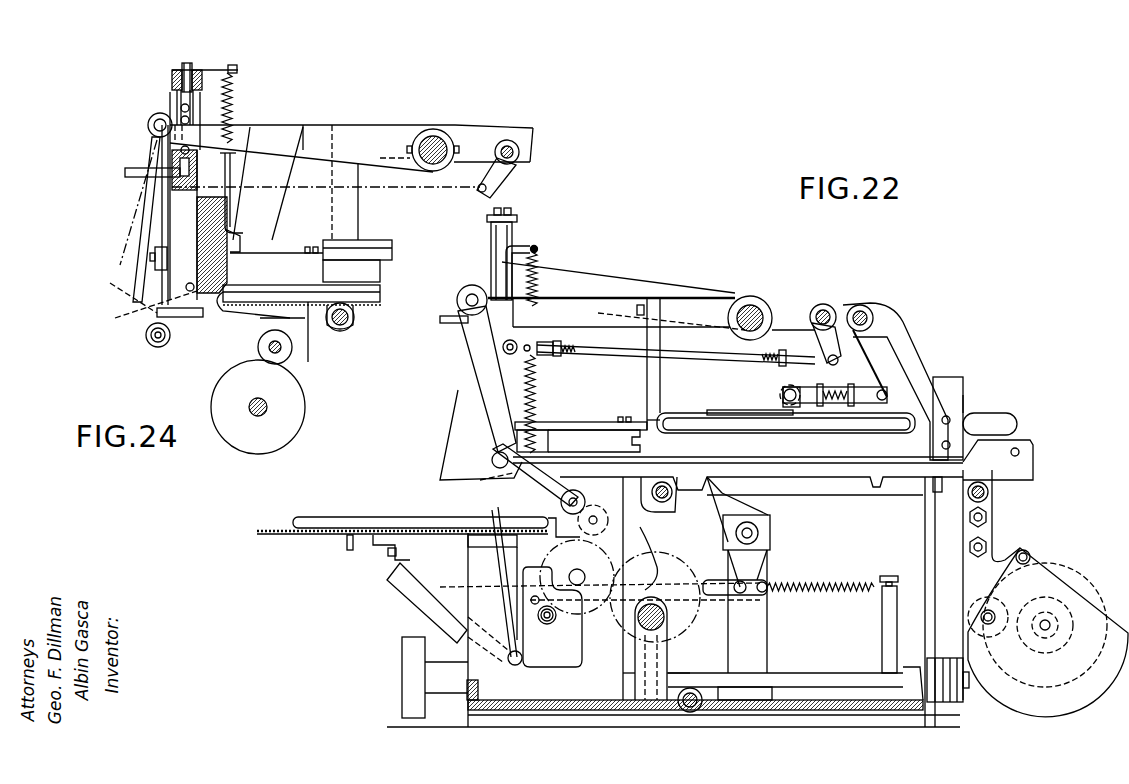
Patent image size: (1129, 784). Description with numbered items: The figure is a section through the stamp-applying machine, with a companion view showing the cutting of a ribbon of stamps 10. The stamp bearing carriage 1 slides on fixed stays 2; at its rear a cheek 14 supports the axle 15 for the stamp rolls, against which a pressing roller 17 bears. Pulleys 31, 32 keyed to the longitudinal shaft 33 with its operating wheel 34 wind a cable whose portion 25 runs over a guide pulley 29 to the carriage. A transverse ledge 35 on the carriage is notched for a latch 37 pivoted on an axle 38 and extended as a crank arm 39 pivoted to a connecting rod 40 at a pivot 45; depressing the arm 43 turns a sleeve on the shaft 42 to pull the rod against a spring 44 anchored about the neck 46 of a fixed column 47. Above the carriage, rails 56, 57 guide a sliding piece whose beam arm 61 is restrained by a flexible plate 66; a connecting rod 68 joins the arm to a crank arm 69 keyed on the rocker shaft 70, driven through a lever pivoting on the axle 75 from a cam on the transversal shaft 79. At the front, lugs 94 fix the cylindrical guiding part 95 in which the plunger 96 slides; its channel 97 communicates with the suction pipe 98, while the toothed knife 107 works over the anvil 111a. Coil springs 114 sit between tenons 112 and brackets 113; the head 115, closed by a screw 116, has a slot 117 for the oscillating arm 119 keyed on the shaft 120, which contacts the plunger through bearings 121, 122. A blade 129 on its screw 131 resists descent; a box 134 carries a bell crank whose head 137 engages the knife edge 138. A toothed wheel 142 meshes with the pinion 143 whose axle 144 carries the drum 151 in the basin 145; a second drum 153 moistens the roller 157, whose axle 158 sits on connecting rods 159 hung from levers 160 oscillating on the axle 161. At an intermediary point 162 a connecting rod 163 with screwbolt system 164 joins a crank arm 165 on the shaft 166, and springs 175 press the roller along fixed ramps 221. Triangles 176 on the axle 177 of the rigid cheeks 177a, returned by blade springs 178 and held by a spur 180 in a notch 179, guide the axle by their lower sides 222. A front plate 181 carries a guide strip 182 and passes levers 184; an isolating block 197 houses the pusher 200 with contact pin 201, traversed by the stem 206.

In FIG. 24, the stamp bearing carriage 1 is at (369, 305).
In FIG. 22, the stamp bearing carriage 1 is at (824, 474).
In FIG. 24, the fixed stays 2 is at (341, 331).
In FIG. 22, the fixed stays 2 is at (670, 494).
In FIG. 24, the stamps 10 is at (200, 312).
In FIG. 22, the cheek 14 is at (1048, 632).
In FIG. 22, the axle 15 is at (1047, 630).
In FIG. 22, the pressing roller 17 is at (989, 632).
In FIG. 22, the cable portion 25 is at (928, 580).
In FIG. 22, the guide pulley 29 is at (930, 483).
In FIG. 22, the pulley 31 is at (934, 703).
In FIG. 22, the pulley 32 is at (960, 703).
In FIG. 22, the shaft 33 is at (803, 673).
In FIG. 22, the operating wheel 34 is at (412, 672).
In FIG. 22, the ledge 35 is at (707, 490).
In FIG. 22, the latch 37 is at (733, 507).
In FIG. 22, the axle 38 is at (760, 532).
In FIG. 22, the crank arm 39 is at (745, 625).
In FIG. 22, the connecting rod 40 is at (706, 594).
In FIG. 22, the shaft 42 is at (512, 664).
In FIG. 22, the arm 43 is at (406, 603).
In FIG. 22, the spring 44 is at (820, 599).
In FIG. 22, the pivot pin 45 is at (766, 591).
In FIG. 22, the neck 46 is at (882, 584).
In FIG. 22, the fixed column 47 is at (882, 641).
In FIG. 24, the rail 56 is at (386, 240).
In FIG. 22, the rail 57 is at (735, 424).
In FIG. 22, the arm 61 is at (784, 398).
In FIG. 22, the flexible plate 66 is at (712, 410).
In FIG. 22, the connecting rod 68 is at (834, 390).
In FIG. 22, the crank arm 69 is at (874, 352).
In FIG. 22, the rocker shaft 70 is at (864, 308).
In FIG. 22, the axle 75 is at (702, 705).
In FIG. 22, the transversal shaft 79 is at (668, 630).
In FIG. 22, the lugs 94 is at (648, 420).
In FIG. 24, the guiding part 95 is at (170, 253).
In FIG. 24, the plunger 96 is at (199, 245).
In FIG. 24, the channel 97 is at (195, 170).
In FIG. 24, the pipe 98 is at (135, 168).
In FIG. 22, the pipe 98 is at (454, 330).
In FIG. 24, the teeth 107 is at (228, 297).
In FIG. 24, the anvil 111a is at (248, 318).
In FIG. 24, the tenons 112 is at (240, 150).
In FIG. 24, the brackets 113 is at (235, 68).
In FIG. 22, the brackets 113 is at (519, 247).
In FIG. 24, the coil springs 114 is at (236, 96).
In FIG. 22, the coil springs 114 is at (560, 292).
In FIG. 22, the head 115 is at (515, 227).
In FIG. 24, the screw 116 is at (180, 72).
In FIG. 22, the slot 117 is at (498, 249).
In FIG. 24, the oscillating arm 119 is at (312, 182).
In FIG. 22, the oscillating arm 119 is at (648, 293).
In FIG. 24, the shaft 120 is at (433, 138).
In FIG. 22, the shaft 120 is at (750, 305).
In FIG. 24, the bearing 121 is at (180, 120).
In FIG. 24, the bearing 122 is at (197, 143).
In FIG. 24, the blade 129 is at (162, 197).
In FIG. 24, the screw 131 is at (150, 255).
In FIG. 24, the box 134 is at (268, 183).
In FIG. 24, the head 137 is at (238, 220).
In FIG. 24, the edge 138 is at (238, 232).
In FIG. 22, the toothed wheel 142 is at (668, 573).
In FIG. 22, the pinion 143 is at (592, 570).
In FIG. 24, the axle 144 is at (258, 399).
In FIG. 22, the axle 144 is at (568, 577).
In FIG. 22, the basin 145 is at (552, 617).
In FIG. 24, the drum 151 is at (258, 407).
In FIG. 24, the second drum 153 is at (285, 352).
In FIG. 22, the second drum 153 is at (600, 516).
In FIG. 24, the moistening roller 157 is at (162, 347).
In FIG. 22, the moistening roller 157 is at (582, 498).
In FIG. 24, the axle 158 is at (152, 343).
In FIG. 22, the axle 158 is at (578, 496).
In FIG. 24, the connecting rod 159 is at (140, 283).
In FIG. 22, the connecting rod 159 is at (547, 486).
In FIG. 24, the lever 160 is at (134, 228).
In FIG. 22, the lever 160 is at (484, 337).
In FIG. 24, the axle 161 is at (158, 125).
In FIG. 22, the axle 161 is at (471, 296).
In FIG. 24, the intermediary point 162 is at (155, 181).
In FIG. 22, the intermediary point 162 is at (510, 340).
In FIG. 24, the connecting rod 163 is at (385, 188).
In FIG. 22, the connecting rod 163 is at (676, 353).
In FIG. 22, the screwbolt system 164 is at (572, 357).
In FIG. 24, the crank arm 165 is at (514, 172).
In FIG. 22, the crank arm 165 is at (820, 337).
In FIG. 24, the shaft 166 is at (507, 140).
In FIG. 22, the shaft 166 is at (825, 305).
In FIG. 22, the springs 175 is at (540, 408).
In FIG. 24, the triangles 176 is at (140, 330).
In FIG. 22, the triangles 176 is at (492, 461).
In FIG. 24, the axle 177 is at (186, 287).
In FIG. 22, the axle 177 is at (495, 455).
In FIG. 22, the rigid cheeks 177a is at (473, 412).
In FIG. 24, the blade springs 178 is at (273, 248).
In FIG. 22, the blade springs 178 is at (575, 424).
In FIG. 24, the notch 179 is at (138, 307).
In FIG. 24, the spur 180 is at (203, 300).
In FIG. 22, the spur 180 is at (546, 486).
In FIG. 22, the plate 181 is at (402, 546).
In FIG. 22, the strip of metal 182 is at (412, 517).
In FIG. 22, the levers 184 is at (439, 548).
In FIG. 22, the isolating block 197 is at (966, 400).
In FIG. 22, the pusher 200 is at (941, 378).
In FIG. 22, the contact pin 201 is at (1000, 413).
In FIG. 22, the stem 206 is at (1018, 440).
In FIG. 24, the fixed ramps 221 is at (270, 315).
In FIG. 22, the lower sides 222 is at (512, 481).